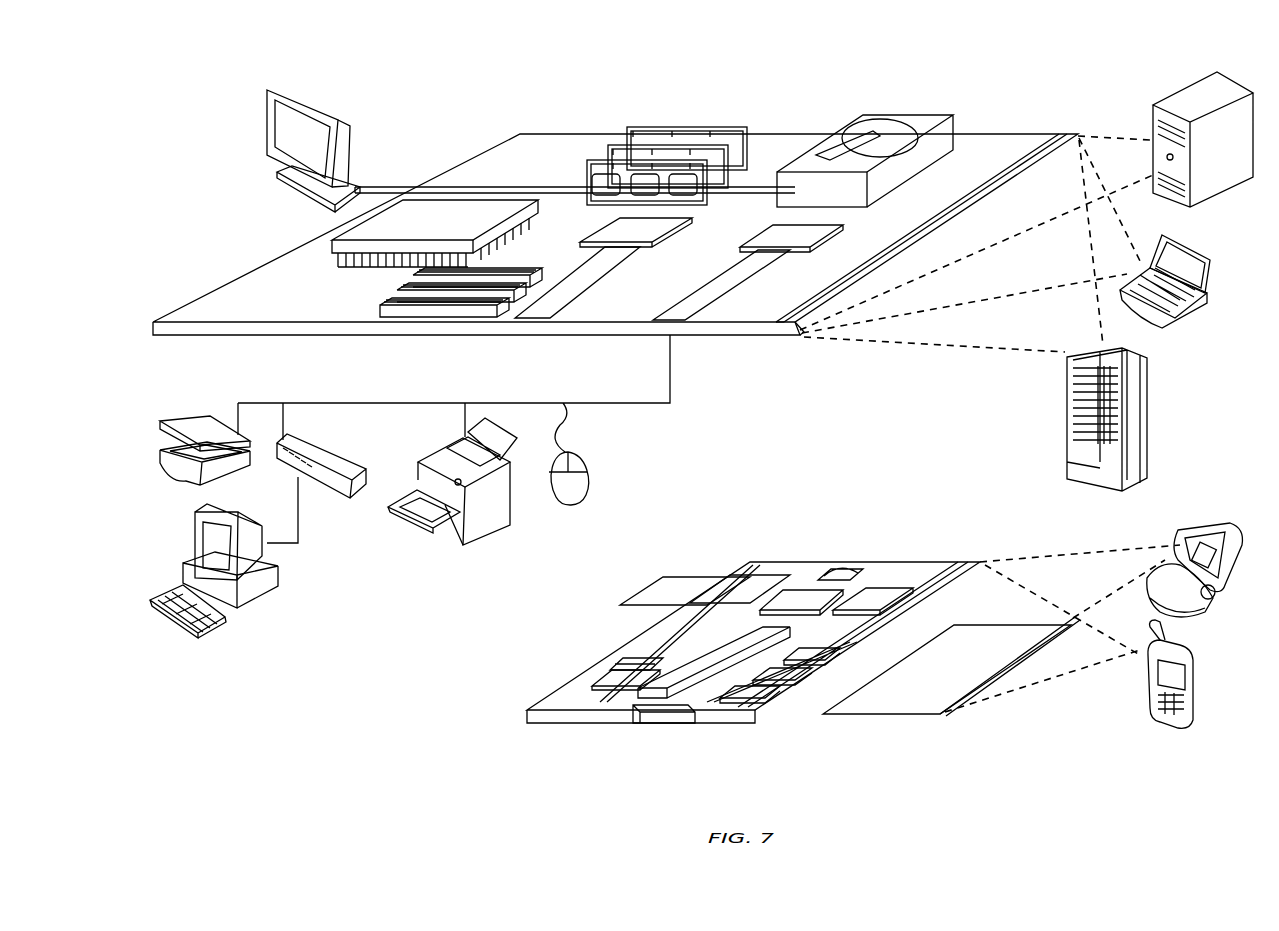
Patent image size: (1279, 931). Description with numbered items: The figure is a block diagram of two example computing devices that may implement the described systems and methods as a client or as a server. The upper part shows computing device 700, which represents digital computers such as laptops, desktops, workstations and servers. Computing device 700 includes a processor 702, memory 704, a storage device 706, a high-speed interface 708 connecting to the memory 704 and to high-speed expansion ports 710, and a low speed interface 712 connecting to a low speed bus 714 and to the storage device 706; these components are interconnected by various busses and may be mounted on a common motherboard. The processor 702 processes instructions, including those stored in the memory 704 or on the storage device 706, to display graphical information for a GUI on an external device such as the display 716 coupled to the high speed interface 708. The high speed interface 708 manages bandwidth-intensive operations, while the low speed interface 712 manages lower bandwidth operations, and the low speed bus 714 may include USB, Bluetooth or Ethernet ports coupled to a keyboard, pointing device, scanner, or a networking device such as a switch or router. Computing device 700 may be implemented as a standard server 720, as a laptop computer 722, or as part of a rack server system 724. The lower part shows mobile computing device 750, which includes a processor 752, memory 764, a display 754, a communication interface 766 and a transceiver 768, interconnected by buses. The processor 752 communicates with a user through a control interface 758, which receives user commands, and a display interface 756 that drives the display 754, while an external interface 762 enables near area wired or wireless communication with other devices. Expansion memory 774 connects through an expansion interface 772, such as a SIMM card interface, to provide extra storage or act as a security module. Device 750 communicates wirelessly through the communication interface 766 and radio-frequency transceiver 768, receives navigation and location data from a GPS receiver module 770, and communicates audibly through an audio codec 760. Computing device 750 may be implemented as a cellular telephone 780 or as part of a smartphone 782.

The computing device 700 is at (451, 107).
The processor 702 is at (330, 245).
The memory 704 is at (640, 128).
The storage device 706 is at (860, 125).
The high-speed interface 708 is at (585, 222).
The high-speed expansion ports 710 is at (380, 310).
The low speed interface 712 is at (772, 232).
The low speed bus 714 is at (675, 330).
The display 716 is at (268, 88).
The standard server 720 is at (1153, 122).
The laptop computer 722 is at (1213, 262).
The rack server system 724 is at (1065, 442).
The computing device 750 is at (498, 720).
The processor 752 is at (690, 685).
The display 754 is at (915, 696).
The display interface 756 is at (763, 702).
The control interface 758 is at (810, 670).
The audio codec 760 is at (827, 660).
The external interface 762 is at (657, 712).
The memory 764 is at (605, 668).
The communication interface 766 is at (797, 590).
The transceiver 768 is at (875, 590).
The GPS receiver module 770 is at (845, 570).
The expansion interface 772 is at (730, 577).
The expansion memory 774 is at (670, 577).
The cellular telephone 780 is at (1190, 525).
The smartphone 782 is at (1148, 695).